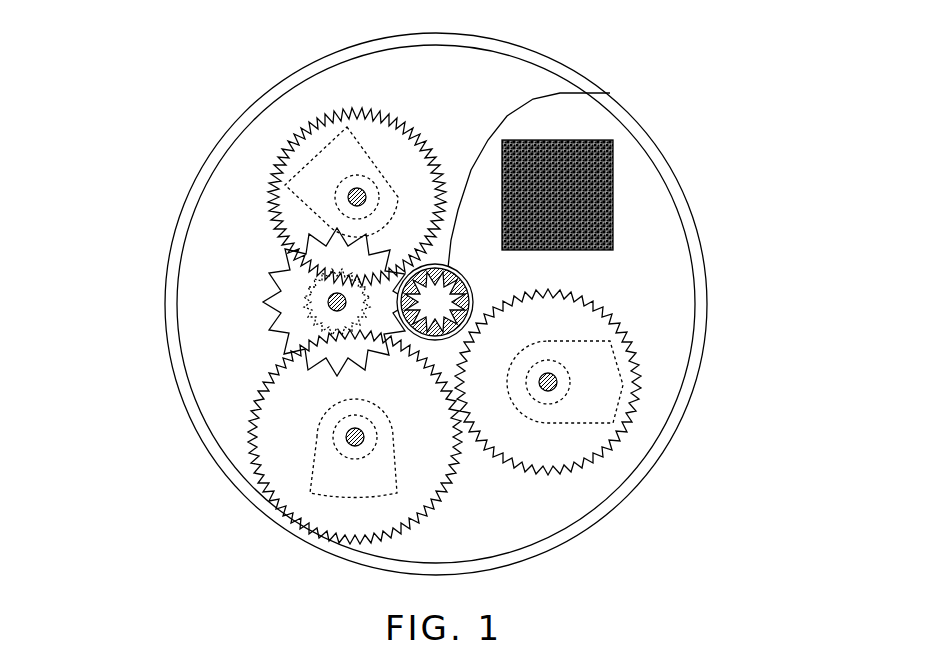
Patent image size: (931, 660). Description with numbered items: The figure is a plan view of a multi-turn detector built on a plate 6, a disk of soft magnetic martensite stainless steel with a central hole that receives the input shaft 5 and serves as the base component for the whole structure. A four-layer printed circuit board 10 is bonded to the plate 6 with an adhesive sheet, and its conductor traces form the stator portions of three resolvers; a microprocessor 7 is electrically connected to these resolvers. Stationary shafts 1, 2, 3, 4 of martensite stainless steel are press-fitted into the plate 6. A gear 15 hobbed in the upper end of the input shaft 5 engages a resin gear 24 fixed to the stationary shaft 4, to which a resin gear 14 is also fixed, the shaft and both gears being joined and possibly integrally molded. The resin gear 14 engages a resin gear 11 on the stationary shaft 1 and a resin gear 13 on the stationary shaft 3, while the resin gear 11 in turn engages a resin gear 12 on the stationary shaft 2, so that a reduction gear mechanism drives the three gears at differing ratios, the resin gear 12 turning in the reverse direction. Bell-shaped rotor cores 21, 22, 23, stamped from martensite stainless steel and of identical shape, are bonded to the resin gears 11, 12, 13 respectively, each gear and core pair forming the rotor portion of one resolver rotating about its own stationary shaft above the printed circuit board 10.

The stationary shaft 1 is at (348, 430).
The resin gear 11 is at (275, 463).
The rotor core 21 is at (333, 480).
The stationary shaft 2 is at (550, 373).
The resin gear 12 is at (578, 447).
The rotor core 22 is at (605, 387).
The stationary shaft 3 is at (362, 193).
The resin gear 13 is at (370, 137).
The rotor core 23 is at (313, 173).
The stationary shaft 4 is at (330, 298).
The resin gear 14 is at (313, 292).
The resin gear 24 is at (297, 317).
The input shaft 5 is at (610, 93).
The plate 6 is at (693, 227).
The microprocessor 7 is at (593, 167).
The four-layer printed circuit board 10 is at (647, 188).
The gear 15 is at (447, 293).